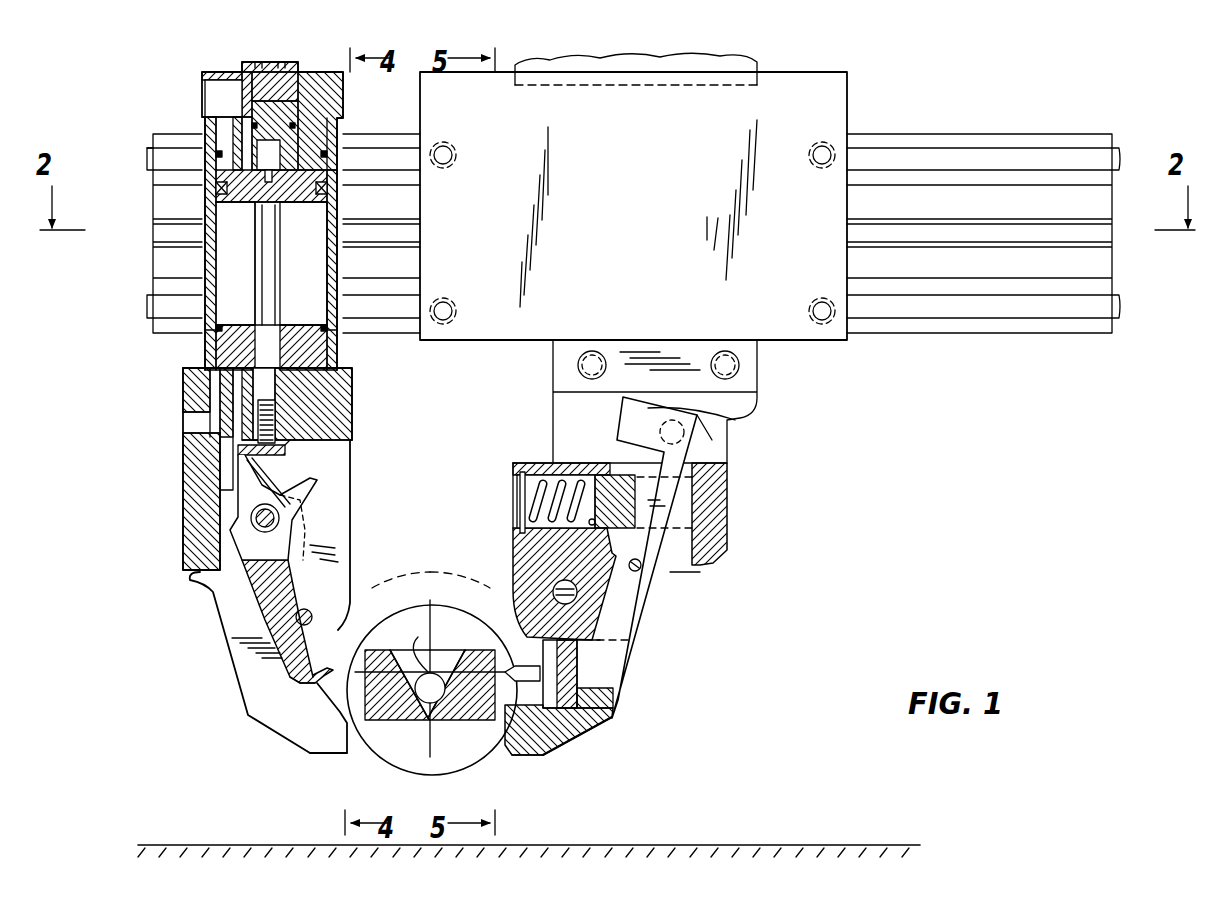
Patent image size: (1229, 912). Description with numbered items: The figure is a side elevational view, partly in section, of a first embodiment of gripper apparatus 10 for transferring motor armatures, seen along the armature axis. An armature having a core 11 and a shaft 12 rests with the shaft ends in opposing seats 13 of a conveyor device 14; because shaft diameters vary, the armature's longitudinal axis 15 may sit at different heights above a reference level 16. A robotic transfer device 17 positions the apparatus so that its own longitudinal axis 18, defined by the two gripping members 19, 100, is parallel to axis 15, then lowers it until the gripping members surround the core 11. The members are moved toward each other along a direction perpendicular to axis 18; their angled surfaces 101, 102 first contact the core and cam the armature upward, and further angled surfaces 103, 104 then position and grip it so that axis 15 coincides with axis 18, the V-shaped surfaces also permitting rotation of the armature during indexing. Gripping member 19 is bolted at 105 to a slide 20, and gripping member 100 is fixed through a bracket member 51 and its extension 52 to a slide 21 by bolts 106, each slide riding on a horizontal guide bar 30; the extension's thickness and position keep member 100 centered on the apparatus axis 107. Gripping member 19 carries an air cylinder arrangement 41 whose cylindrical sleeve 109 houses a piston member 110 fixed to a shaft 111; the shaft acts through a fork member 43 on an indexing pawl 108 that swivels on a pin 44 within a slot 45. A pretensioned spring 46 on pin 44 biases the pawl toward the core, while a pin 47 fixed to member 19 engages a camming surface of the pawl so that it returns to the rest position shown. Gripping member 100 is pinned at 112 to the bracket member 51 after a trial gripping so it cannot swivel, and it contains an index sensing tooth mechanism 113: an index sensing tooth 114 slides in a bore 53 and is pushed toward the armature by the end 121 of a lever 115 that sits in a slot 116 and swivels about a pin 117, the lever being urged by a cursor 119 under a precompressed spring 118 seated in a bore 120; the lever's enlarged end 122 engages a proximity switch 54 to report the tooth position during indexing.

The gripper apparatus 10 is at (881, 530).
The core 11 is at (483, 743).
The shaft 12 is at (390, 713).
The seats 13 is at (450, 713).
The conveyor device 14 is at (390, 757).
The longitudinal axis 15 is at (443, 680).
The reference level 16 is at (650, 846).
The robotic transfer device 17 is at (700, 62).
The longitudinal axis 18 is at (409, 640).
The gripping member 19 is at (243, 660).
The slide 20 is at (335, 366).
The slide 21 is at (553, 368).
The horizontal guide bar 30 is at (1118, 152).
The air cylinder arrangement 41 is at (145, 152).
The fork member 43 is at (243, 478).
The pin 44 is at (250, 520).
The slot 45 is at (290, 468).
The pretensioned spring 46 is at (298, 500).
The pin 47 is at (310, 607).
The bracket member 51 is at (730, 500).
The extension 52 is at (660, 410).
The bore 53 is at (612, 700).
The proximity switch 54 is at (712, 440).
The gripping member 100 is at (612, 718).
The angled surface 101 is at (337, 737).
The angled surface 102 is at (553, 755).
The angled surface 103 is at (357, 600).
The angled surface 104 is at (513, 618).
The bolts 105 is at (340, 432).
The bolts 106 is at (712, 367).
The axis 107 is at (432, 598).
The indexing pawl 108 is at (260, 597).
The cylindrical sleeve 109 is at (200, 335).
The piston member 110 is at (238, 216).
The shaft 111 is at (284, 272).
The pin 112 is at (580, 593).
The index sensing tooth mechanism 113 is at (694, 647).
The index sensing tooth 114 is at (572, 735).
The lever 115 is at (660, 518).
The slot 116 is at (642, 567).
The pin 117 is at (690, 565).
The precompressed spring 118 is at (528, 498).
The cursor 119 is at (603, 475).
The bore 120 is at (522, 497).
The end 121 is at (590, 672).
The enlarged end 122 is at (690, 432).